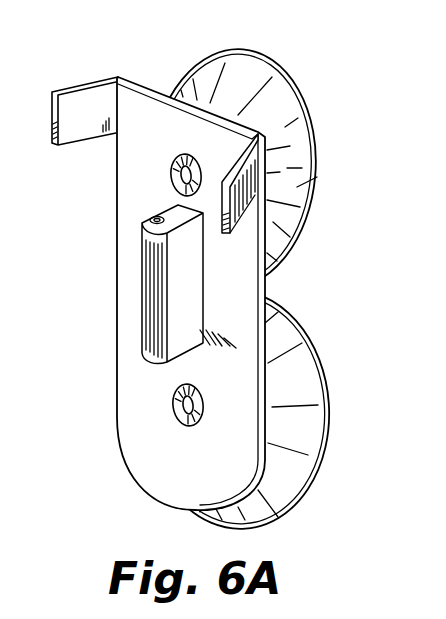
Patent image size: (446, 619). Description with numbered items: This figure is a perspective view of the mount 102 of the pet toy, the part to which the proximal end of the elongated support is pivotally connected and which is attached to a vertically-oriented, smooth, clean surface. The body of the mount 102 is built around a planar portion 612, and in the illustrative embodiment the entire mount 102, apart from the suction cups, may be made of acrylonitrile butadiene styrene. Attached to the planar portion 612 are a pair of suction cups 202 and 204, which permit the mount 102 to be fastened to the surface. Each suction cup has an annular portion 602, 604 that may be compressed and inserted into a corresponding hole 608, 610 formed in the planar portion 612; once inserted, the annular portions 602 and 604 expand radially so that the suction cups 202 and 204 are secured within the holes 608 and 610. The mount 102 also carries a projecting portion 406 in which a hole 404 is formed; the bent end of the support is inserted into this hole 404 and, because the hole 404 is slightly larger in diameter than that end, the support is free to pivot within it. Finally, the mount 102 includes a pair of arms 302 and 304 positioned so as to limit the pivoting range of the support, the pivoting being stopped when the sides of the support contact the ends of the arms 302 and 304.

The mount 102 is at (336, 83).
The suction cup 202 is at (296, 193).
The suction cup 204 is at (322, 392).
The arm 302 is at (256, 163).
The arm 304 is at (84, 100).
The hole 404 is at (155, 217).
The projecting portion 406 is at (142, 293).
The annular portion 602 is at (170, 176).
The annular portion 604 is at (175, 422).
The hole 608 is at (173, 158).
The hole 610 is at (172, 400).
The planar portion 612 is at (240, 287).